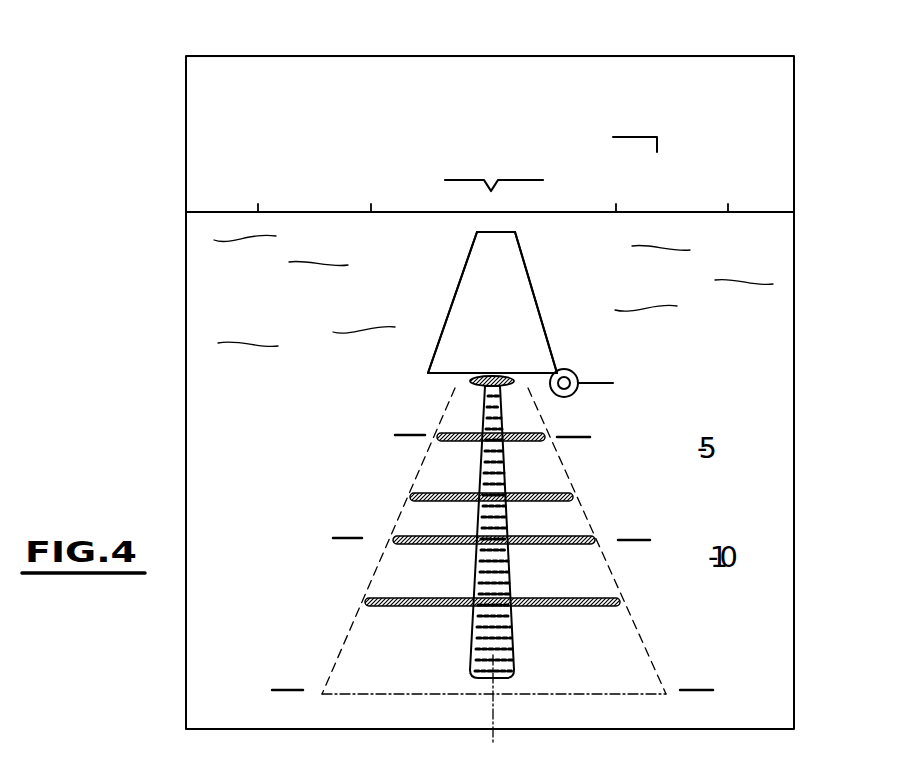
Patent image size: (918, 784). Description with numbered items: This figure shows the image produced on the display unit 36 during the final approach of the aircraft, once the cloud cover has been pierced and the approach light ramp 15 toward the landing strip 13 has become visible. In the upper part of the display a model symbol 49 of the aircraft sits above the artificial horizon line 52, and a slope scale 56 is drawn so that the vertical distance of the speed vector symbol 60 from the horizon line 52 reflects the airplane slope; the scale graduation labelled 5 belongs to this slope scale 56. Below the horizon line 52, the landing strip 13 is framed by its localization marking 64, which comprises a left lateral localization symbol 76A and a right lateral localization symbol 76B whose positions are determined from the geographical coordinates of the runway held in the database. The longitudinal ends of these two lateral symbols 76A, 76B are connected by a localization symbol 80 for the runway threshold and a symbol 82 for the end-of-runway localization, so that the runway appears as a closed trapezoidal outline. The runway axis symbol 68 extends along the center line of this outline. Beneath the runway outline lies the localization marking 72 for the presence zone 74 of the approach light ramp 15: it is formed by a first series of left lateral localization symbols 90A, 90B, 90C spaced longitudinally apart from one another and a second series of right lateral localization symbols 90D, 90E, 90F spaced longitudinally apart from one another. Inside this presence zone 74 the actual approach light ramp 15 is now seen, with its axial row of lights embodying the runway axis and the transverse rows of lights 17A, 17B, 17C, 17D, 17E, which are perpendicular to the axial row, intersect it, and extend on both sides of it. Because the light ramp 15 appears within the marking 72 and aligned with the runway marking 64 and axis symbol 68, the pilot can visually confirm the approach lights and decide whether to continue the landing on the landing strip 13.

The scale bar 5 is at (648, 147).
The landing strip 13 is at (466, 274).
The approach light ramp 15 is at (416, 513).
The transverse row of lights 17A is at (510, 375).
The transverse row of lights 17B is at (548, 440).
The transverse row of lights 17C is at (560, 497).
The transverse row of lights 17D is at (580, 548).
The transverse row of lights 17E is at (585, 603).
The display unit 36 is at (806, 291).
The model symbol of the aircraft 49 is at (468, 180).
The artificial horizon line 52 is at (708, 212).
The slope scale 56 is at (641, 125).
The speed vector symbol 60 is at (598, 383).
The localization marking of the landing strip 64 is at (539, 253).
The runway axis symbol 68 is at (493, 703).
The localization marking for the presence zone 72 is at (321, 371).
The presence zone 74 is at (322, 693).
The left lateral localization symbol 76A is at (448, 302).
The right lateral localization symbol 76B is at (540, 304).
The localization symbol for the runway threshold 80 is at (441, 374).
The symbol for the end-of-runway localization 82 is at (503, 232).
The left lateral localization symbol 90A is at (410, 435).
The left lateral localization symbol 90B is at (350, 537).
The left lateral localization symbol 90C is at (292, 688).
The right lateral localization symbol 90D is at (583, 436).
The right lateral localization symbol 90E is at (638, 538).
The right lateral localization symbol 90F is at (697, 688).